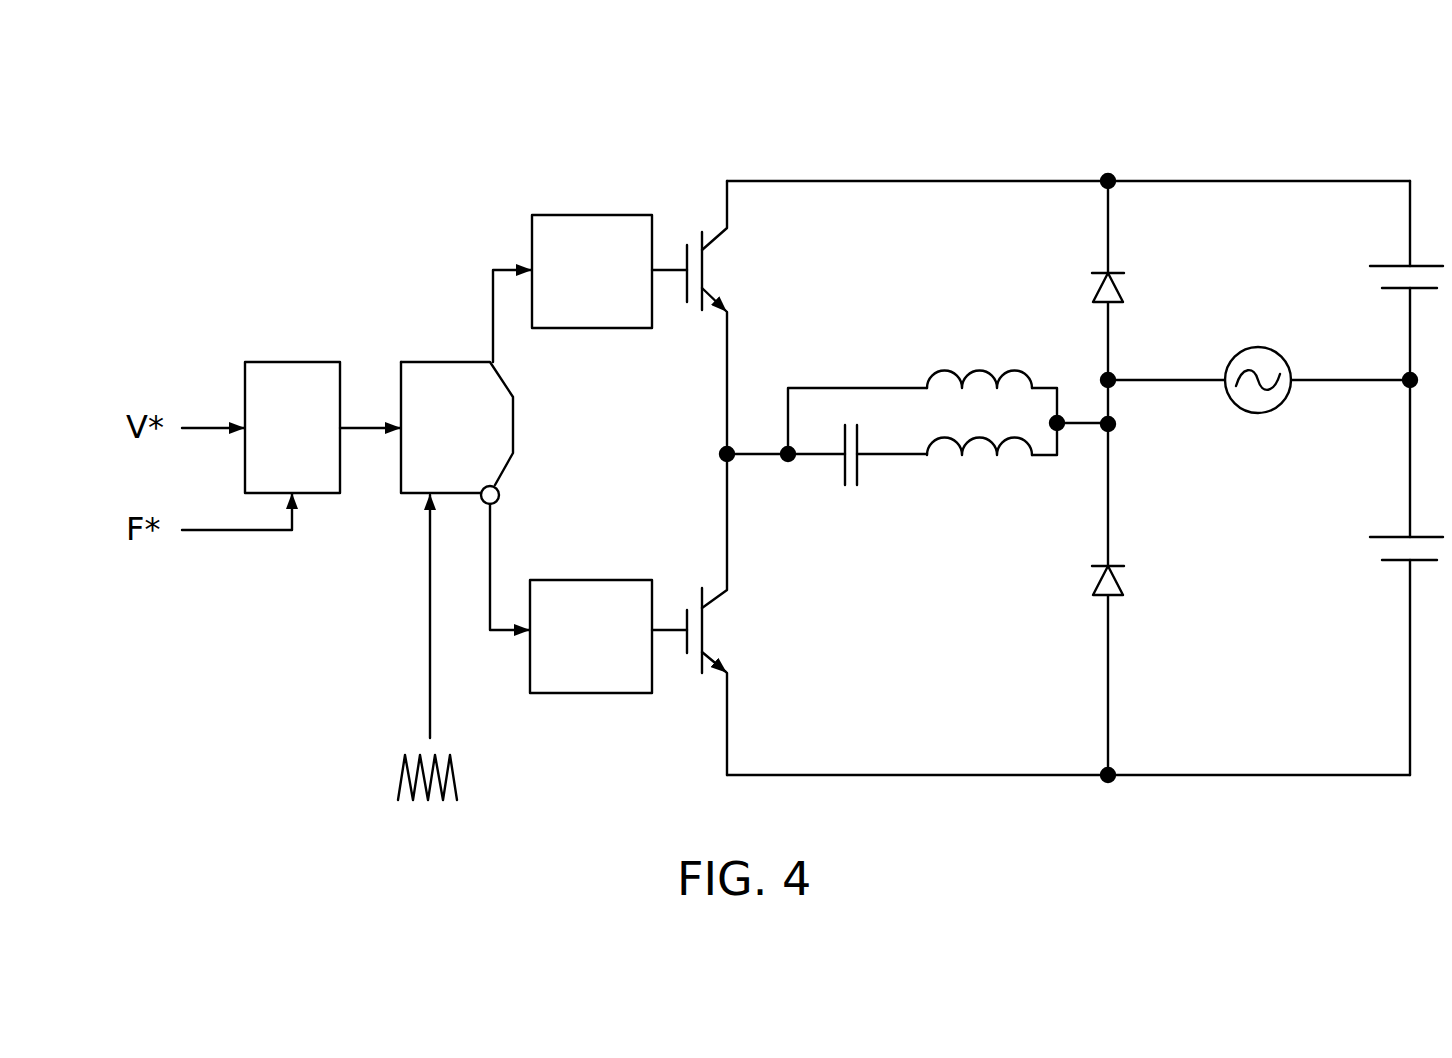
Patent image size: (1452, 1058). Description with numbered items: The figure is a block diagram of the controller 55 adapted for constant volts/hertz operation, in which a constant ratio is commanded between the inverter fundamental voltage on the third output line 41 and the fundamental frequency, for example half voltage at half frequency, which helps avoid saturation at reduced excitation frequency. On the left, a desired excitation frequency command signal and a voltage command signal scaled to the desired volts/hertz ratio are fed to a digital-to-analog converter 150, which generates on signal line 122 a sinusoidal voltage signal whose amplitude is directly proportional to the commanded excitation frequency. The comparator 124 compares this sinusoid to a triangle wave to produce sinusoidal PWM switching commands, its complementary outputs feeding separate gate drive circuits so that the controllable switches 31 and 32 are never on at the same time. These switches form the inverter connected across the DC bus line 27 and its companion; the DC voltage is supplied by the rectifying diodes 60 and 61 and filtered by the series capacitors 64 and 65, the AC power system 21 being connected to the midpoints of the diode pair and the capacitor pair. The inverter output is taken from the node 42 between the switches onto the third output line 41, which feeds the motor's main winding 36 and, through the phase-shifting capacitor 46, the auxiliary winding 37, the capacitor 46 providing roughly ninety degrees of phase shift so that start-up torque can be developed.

The AC power system 21 is at (1303, 310).
The DC bus line 27 is at (832, 181).
The controllable switch 31 is at (722, 263).
The controllable switch 32 is at (717, 647).
The main winding 36 is at (1010, 367).
The auxiliary winding 37 is at (1013, 445).
The third output line 41 is at (767, 450).
The node 42 is at (728, 460).
The phase-shifting capacitor 46 is at (840, 472).
The controller 55 is at (298, 667).
The rectifying diode 60 is at (1090, 567).
The rectifying diode 61 is at (1085, 283).
The capacitor 64 is at (1383, 547).
The capacitor 65 is at (1397, 260).
The signal line 122 is at (368, 427).
The comparator 124 is at (460, 362).
The digital-to-analog converter 150 is at (310, 362).